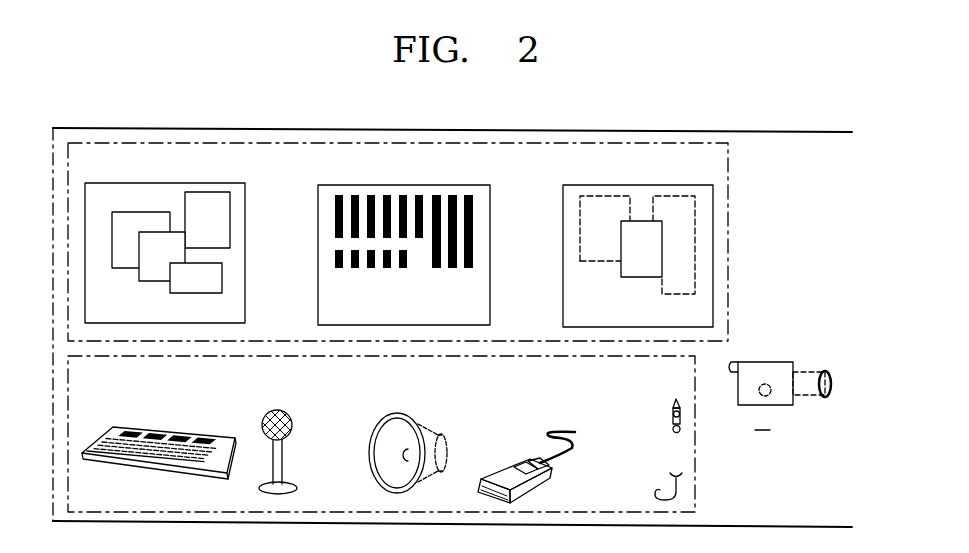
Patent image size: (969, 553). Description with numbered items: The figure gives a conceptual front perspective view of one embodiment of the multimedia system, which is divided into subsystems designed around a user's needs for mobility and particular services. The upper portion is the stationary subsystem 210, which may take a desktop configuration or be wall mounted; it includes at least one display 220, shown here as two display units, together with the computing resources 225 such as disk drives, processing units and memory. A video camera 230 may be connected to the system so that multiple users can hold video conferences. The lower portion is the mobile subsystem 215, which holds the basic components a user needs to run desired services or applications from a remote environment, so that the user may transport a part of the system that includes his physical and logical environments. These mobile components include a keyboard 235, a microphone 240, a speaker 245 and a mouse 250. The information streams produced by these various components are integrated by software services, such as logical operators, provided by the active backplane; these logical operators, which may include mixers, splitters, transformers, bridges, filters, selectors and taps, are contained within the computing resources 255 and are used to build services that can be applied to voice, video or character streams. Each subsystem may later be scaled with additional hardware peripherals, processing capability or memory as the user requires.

The stationary subsystem 210 is at (226, 158).
The mobile subsystem 215 is at (695, 462).
The display 220 is at (147, 222).
The computing resources 225 is at (343, 290).
The video camera 230 is at (770, 362).
The keyboard 235 is at (160, 440).
The microphone 240 is at (293, 423).
The speaker 245 is at (444, 447).
The mouse 250 is at (545, 483).
The computing resources 255 is at (670, 410).